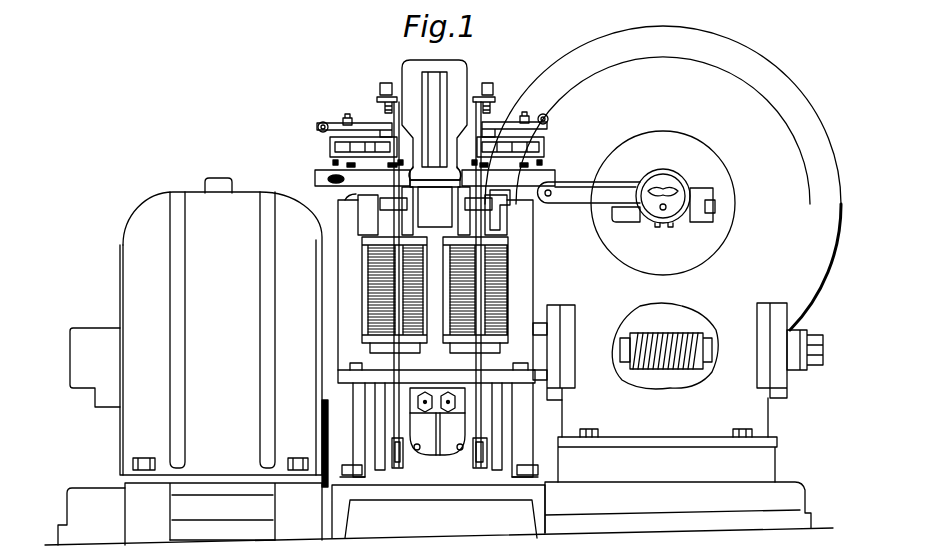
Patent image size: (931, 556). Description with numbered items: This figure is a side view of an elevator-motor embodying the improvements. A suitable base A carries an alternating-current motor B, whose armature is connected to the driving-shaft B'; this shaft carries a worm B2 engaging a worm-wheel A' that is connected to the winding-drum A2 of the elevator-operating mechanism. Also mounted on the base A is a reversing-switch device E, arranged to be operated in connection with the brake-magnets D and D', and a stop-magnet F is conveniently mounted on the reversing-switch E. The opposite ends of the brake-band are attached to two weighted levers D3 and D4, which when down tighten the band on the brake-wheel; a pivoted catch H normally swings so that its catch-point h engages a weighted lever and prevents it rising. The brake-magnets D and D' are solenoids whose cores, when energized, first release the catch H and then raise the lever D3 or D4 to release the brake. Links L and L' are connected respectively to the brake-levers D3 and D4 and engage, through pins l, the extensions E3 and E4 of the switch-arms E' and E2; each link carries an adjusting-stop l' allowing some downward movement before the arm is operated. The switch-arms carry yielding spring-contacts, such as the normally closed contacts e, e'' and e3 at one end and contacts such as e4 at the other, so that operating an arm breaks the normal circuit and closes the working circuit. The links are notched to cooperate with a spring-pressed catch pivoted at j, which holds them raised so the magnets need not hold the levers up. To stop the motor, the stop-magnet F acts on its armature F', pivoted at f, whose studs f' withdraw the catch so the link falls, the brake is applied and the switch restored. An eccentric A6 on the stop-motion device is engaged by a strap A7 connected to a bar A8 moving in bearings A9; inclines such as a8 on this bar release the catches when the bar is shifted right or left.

The base A is at (434, 472).
The worm-wheel A' is at (665, 346).
The winding-drum A2 is at (787, 90).
The eccentric A6 is at (672, 180).
The strap A7 is at (613, 187).
The bar A8 is at (352, 197).
The bearings A9 is at (391, 200).
The incline a8 is at (673, 197).
The alternating-current motor B is at (196, 326).
The driving-shaft B' is at (622, 379).
The worm B2 is at (677, 370).
The brake-magnet D is at (387, 290).
The brake-magnet D' is at (499, 290).
The weighted lever D3 is at (397, 453).
The weighted lever D4 is at (483, 450).
The reversing-switch device E is at (426, 177).
The switch-arm E' is at (351, 152).
The switch-arm E2 is at (545, 137).
The extension E3 is at (386, 124).
The extension E4 is at (493, 122).
The contact e is at (353, 118).
The contact e'' is at (547, 123).
The contact e3 is at (545, 122).
The contact e4 is at (327, 133).
The stop-magnet F is at (431, 110).
The armature F' is at (451, 105).
The pivot f is at (435, 207).
The studs f' is at (435, 193).
The catch H is at (437, 421).
The catch-point h is at (437, 461).
The pivot j is at (513, 218).
The link L is at (395, 354).
The link L' is at (475, 354).
The pin l is at (436, 284).
The adjusting-stop l' is at (433, 95).